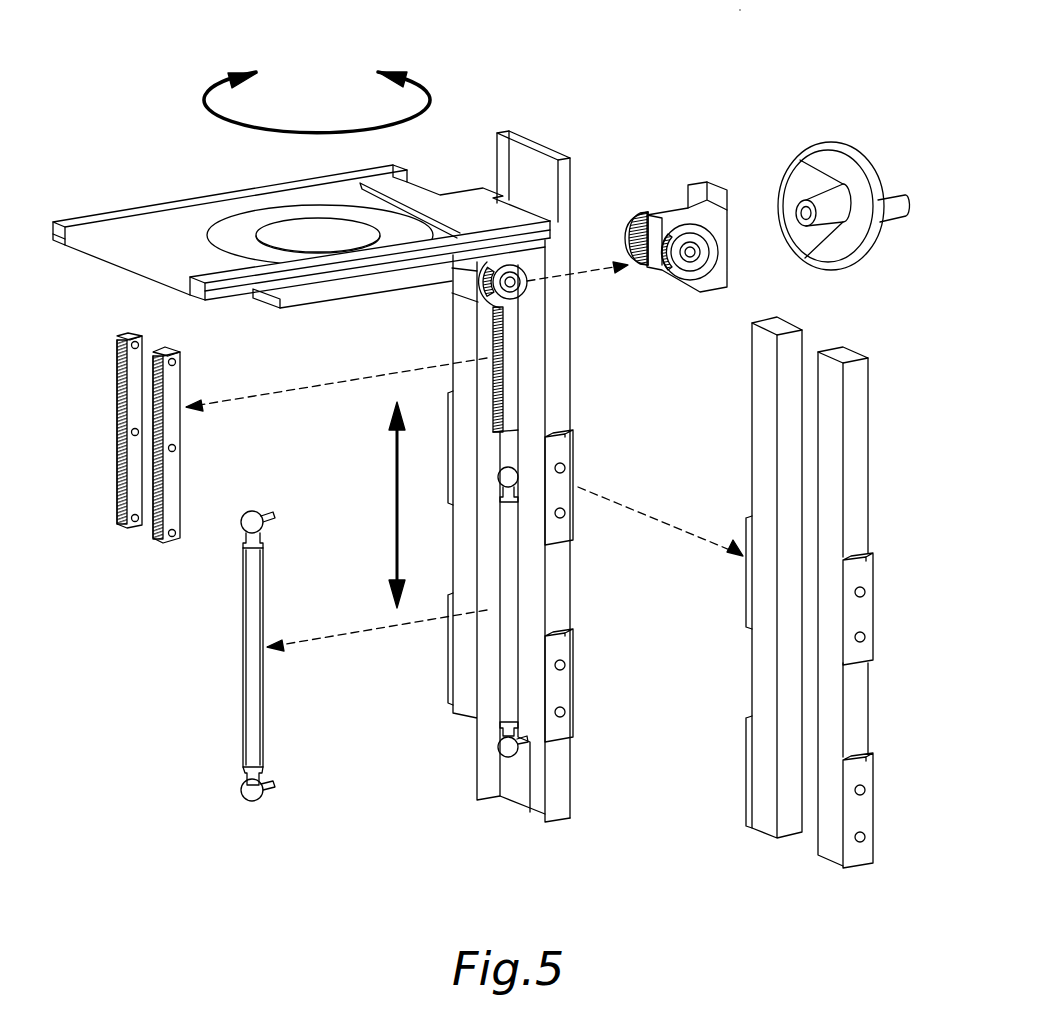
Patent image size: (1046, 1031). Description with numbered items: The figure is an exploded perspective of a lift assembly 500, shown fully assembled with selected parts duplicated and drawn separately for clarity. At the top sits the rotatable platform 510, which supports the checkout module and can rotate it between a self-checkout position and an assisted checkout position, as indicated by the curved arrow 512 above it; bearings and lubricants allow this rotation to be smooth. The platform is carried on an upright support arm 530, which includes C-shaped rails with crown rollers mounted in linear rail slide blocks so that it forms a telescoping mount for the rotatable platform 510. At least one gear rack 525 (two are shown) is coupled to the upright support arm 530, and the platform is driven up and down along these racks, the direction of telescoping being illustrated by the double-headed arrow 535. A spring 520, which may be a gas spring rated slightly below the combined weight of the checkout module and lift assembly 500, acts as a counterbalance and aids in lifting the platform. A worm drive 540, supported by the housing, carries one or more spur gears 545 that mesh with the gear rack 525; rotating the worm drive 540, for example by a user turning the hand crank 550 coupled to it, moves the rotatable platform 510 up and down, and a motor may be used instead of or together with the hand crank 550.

The lift assembly 500 is at (717, 43).
The rotatable platform 510 is at (217, 196).
The arrow 512 is at (317, 137).
The spring 520 is at (508, 647).
The gear rack 525 is at (490, 338).
The upright support arm 530 is at (572, 583).
The arrow 535 is at (391, 505).
The worm drive 540 is at (677, 213).
The spur gear 545 is at (480, 307).
The hand crank 550 is at (810, 147).